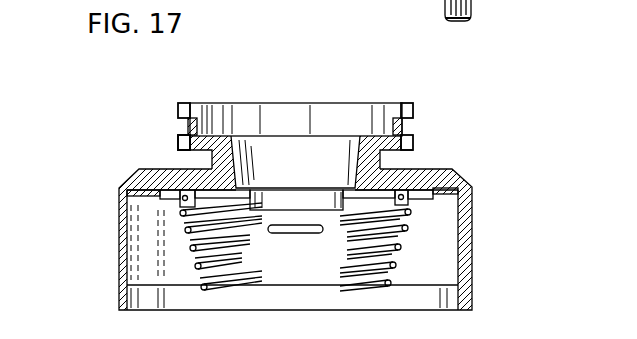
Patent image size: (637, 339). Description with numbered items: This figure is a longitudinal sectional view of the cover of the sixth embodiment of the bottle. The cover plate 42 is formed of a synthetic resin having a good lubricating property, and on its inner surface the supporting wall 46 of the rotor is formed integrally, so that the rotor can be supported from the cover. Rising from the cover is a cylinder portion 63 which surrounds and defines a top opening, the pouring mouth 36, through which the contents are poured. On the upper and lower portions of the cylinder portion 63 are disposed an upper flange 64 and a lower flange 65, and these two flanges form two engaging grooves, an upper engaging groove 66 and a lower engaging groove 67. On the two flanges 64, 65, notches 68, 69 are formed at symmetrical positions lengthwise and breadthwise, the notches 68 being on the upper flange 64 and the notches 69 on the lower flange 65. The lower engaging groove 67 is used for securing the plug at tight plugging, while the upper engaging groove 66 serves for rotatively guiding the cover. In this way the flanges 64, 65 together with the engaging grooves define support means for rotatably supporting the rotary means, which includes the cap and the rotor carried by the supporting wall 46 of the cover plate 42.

The pouring mouth 36 is at (305, 155).
The cover plate 42 is at (468, 182).
The supporting wall 46 is at (427, 170).
The cylinder portion 63 is at (395, 103).
The upper flange 64 is at (178, 110).
The lower flange 65 is at (178, 145).
The upper engaging groove 66 is at (186, 124).
The lower engaging groove 67 is at (198, 158).
The notch 68 is at (185, 103).
The notch 69 is at (186, 137).